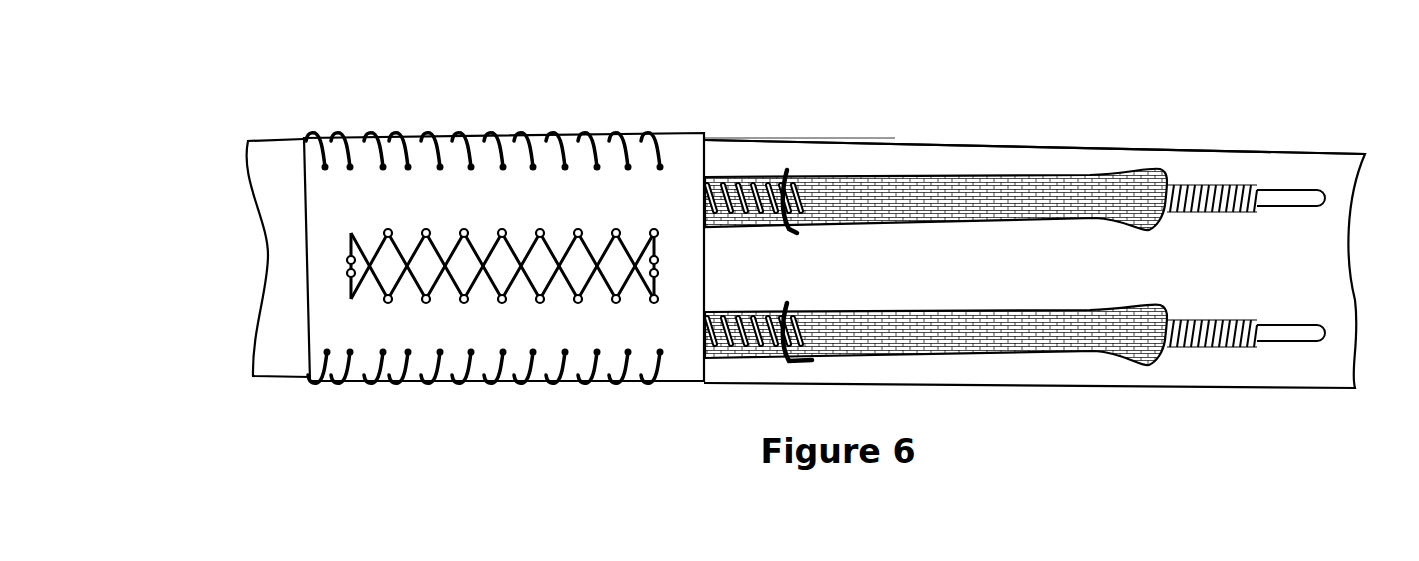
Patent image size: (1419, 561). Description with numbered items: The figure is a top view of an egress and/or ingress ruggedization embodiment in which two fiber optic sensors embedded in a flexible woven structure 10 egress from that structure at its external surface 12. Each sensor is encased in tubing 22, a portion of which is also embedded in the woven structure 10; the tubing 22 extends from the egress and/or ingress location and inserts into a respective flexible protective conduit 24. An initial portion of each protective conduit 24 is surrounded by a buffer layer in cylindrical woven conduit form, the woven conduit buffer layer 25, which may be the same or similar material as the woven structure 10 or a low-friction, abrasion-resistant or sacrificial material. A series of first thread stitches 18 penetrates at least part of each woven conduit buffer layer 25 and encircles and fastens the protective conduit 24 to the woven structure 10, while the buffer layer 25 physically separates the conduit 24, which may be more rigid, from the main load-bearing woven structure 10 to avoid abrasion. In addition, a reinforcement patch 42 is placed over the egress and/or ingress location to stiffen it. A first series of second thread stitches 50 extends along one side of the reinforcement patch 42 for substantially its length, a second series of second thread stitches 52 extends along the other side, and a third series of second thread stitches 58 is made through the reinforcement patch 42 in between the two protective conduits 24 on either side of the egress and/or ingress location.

The flexible woven structure 10 is at (1015, 280).
The external surface 12 is at (951, 143).
The first thread stitches 18 is at (752, 322).
The tubing 22 is at (1302, 319).
The flexible protective conduit 24 is at (1198, 312).
The woven conduit buffer layer 25 is at (1046, 229).
The reinforcement patch 42 is at (335, 213).
The first series of second thread stitches 50 is at (422, 125).
The second series of second thread stitches 52 is at (402, 385).
The third series of second thread stitches 58 is at (510, 240).